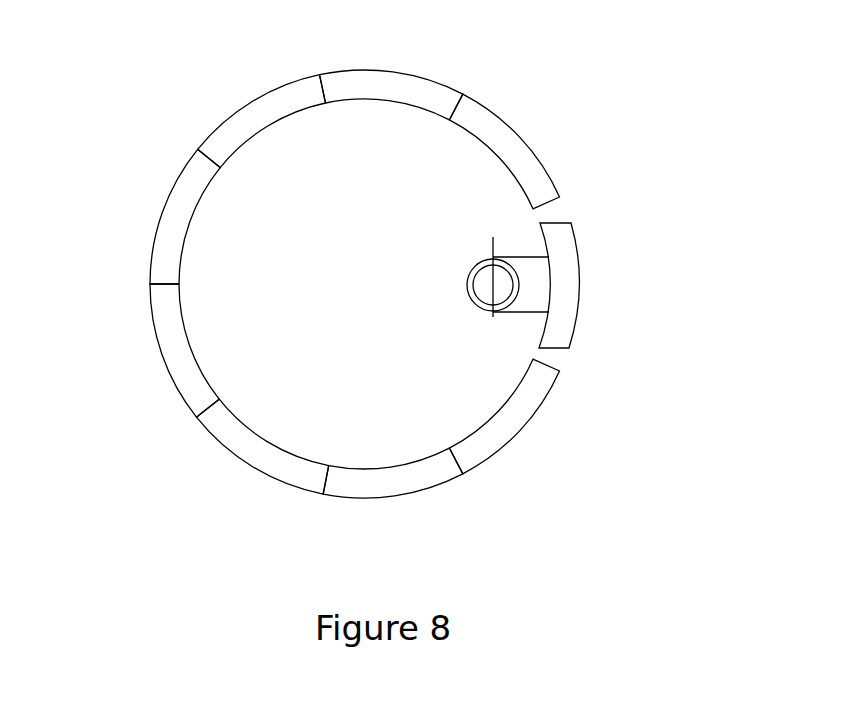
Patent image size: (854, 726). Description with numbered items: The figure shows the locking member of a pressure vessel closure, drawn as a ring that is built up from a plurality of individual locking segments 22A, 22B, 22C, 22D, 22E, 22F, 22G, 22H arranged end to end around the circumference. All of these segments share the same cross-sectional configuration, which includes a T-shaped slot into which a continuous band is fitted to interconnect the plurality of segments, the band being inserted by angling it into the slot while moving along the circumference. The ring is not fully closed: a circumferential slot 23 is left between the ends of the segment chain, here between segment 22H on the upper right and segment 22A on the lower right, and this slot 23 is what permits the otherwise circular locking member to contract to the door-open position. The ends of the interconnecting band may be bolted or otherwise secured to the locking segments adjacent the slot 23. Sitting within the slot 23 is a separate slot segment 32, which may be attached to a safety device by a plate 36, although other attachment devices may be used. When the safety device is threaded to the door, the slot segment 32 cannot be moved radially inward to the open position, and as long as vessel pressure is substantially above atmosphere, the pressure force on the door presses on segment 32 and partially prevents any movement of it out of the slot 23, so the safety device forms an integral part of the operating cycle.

The locking segment 22A is at (520, 408).
The locking segment 22B is at (408, 477).
The locking segment 22C is at (257, 453).
The locking segment 22D is at (175, 349).
The locking segment 22E is at (175, 215).
The locking segment 22F is at (257, 108).
The locking segment 22G is at (420, 90).
The locking segment 22H is at (522, 165).
The circumferential slot 23 is at (534, 207).
The slot segment 32 is at (570, 290).
The plate 36 is at (538, 272).